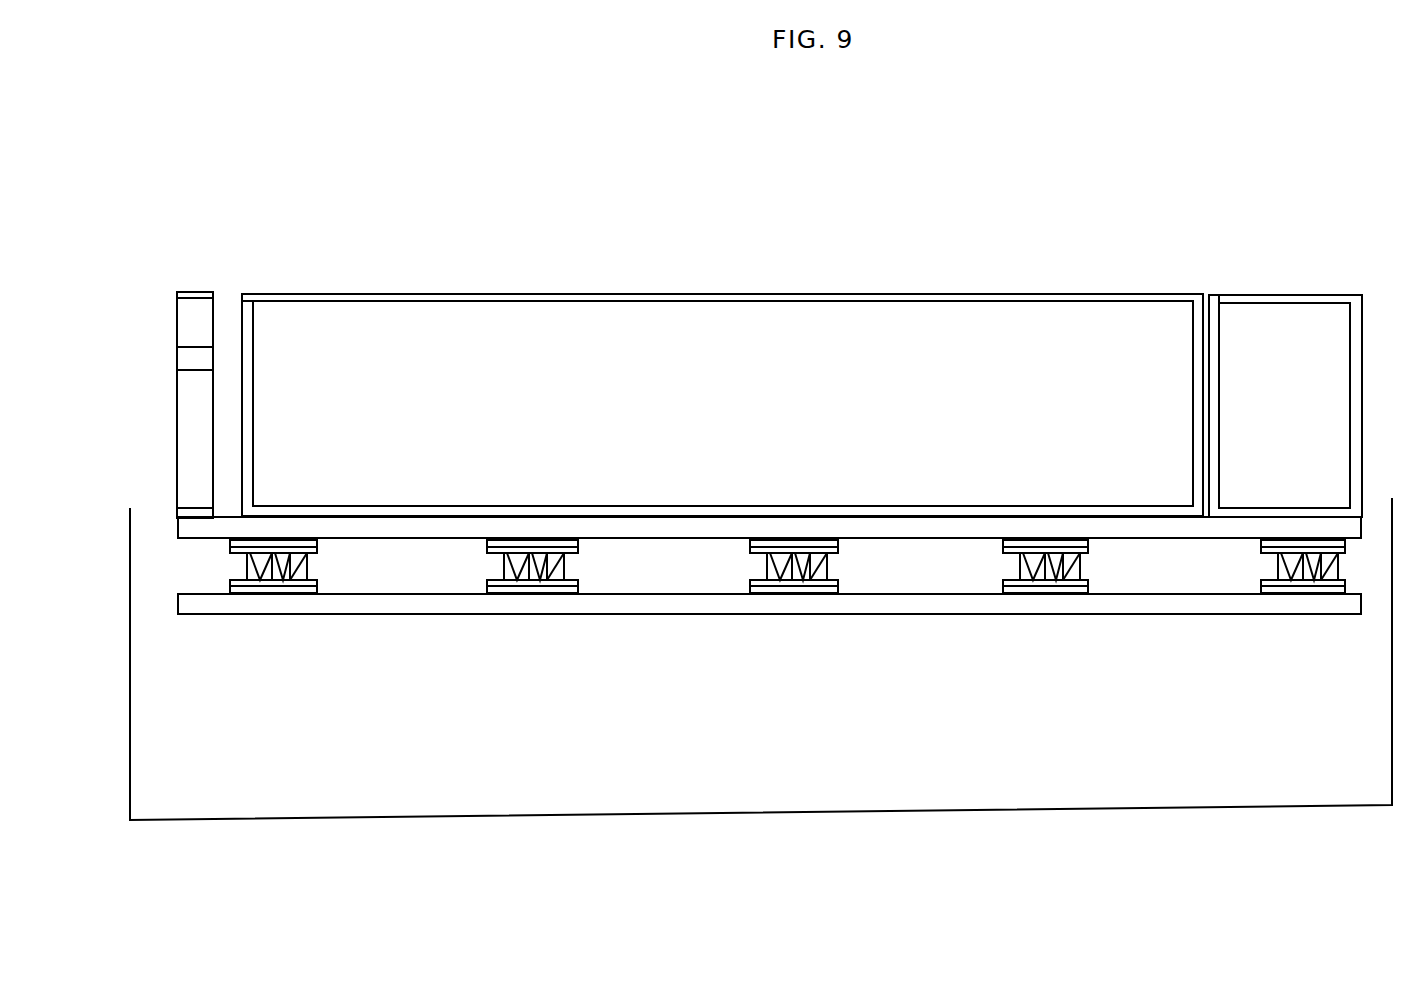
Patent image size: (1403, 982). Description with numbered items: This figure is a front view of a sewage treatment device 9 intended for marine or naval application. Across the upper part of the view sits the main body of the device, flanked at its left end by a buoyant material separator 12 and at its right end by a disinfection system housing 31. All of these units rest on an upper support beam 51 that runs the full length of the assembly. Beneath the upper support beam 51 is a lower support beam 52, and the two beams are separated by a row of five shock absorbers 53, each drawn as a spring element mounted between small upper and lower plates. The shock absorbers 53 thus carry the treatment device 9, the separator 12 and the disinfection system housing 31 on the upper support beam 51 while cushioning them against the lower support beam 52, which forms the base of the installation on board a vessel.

The sewage treatment device 9 is at (768, 813).
The buoyant material separator 12 is at (195, 292).
The disinfection system housing 31 is at (1288, 312).
The upper support beam 51 is at (752, 656).
The lower support beam 52 is at (203, 614).
The shock absorbers 53 is at (272, 593).